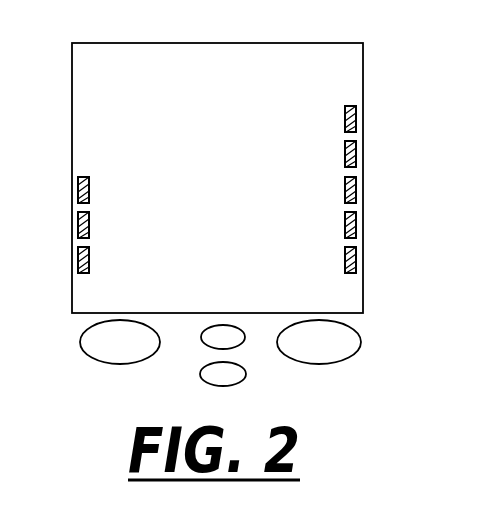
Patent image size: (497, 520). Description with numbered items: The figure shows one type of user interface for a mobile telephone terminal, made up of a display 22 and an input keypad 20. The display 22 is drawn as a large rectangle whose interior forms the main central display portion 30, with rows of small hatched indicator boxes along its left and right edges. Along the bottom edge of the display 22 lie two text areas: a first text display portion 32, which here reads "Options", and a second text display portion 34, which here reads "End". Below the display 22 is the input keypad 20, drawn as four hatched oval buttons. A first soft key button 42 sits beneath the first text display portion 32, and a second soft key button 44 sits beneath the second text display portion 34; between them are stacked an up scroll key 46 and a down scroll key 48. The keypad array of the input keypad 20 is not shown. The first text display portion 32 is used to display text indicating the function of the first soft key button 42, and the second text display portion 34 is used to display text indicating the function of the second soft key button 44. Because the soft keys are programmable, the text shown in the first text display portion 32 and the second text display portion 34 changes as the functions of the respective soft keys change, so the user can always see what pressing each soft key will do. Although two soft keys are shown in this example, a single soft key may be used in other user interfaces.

The input keypad 20 is at (107, 387).
The display 22 is at (267, 52).
The main central display portion 30 is at (230, 166).
The first text display portion 32 is at (85, 294).
The second text display portion 34 is at (348, 298).
The first soft key button 42 is at (92, 337).
The second soft key button 44 is at (350, 348).
The up scroll key 46 is at (203, 345).
The down scroll key 48 is at (243, 375).